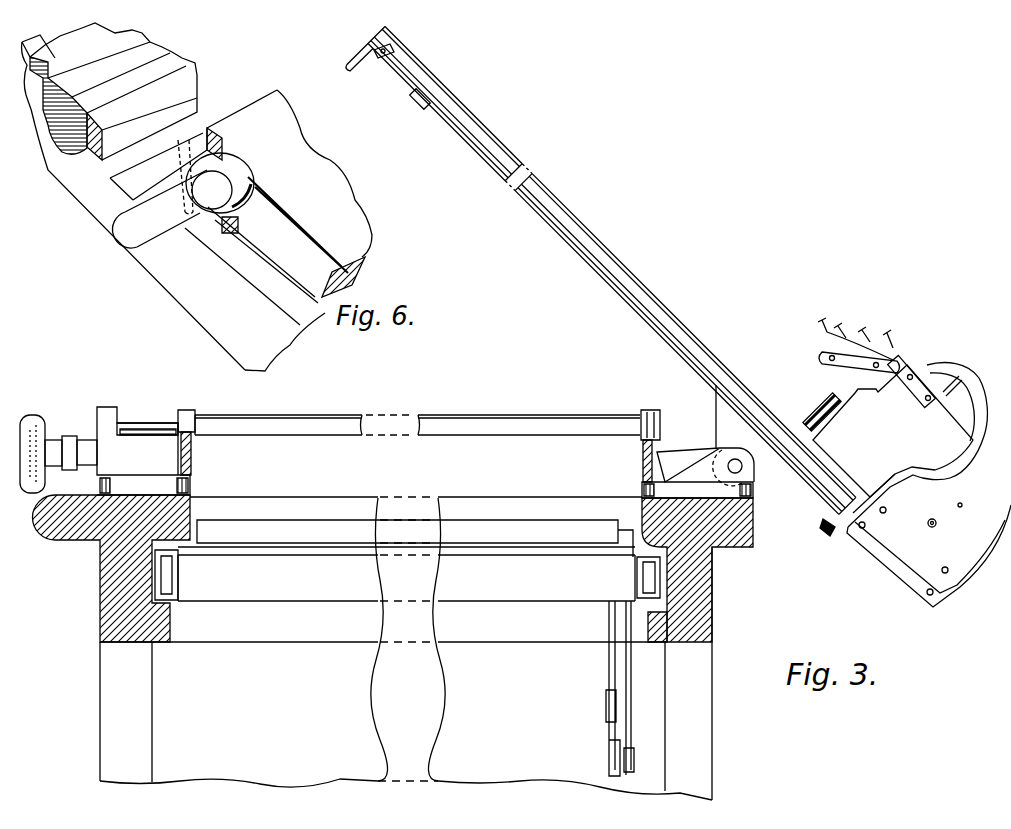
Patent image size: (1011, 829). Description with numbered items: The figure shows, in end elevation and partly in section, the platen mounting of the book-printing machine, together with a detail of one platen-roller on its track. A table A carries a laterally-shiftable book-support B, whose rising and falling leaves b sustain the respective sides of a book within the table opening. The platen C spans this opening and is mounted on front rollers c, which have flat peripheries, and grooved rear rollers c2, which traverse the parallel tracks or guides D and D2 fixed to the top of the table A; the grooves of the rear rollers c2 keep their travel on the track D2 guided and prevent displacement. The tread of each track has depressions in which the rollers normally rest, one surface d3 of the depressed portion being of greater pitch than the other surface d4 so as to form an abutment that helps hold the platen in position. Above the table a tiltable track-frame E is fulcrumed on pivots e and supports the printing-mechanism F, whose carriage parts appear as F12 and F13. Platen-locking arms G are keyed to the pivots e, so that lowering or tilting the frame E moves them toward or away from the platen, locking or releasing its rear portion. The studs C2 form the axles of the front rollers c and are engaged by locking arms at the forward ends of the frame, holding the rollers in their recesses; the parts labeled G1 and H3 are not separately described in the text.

In FIG. 3, the table A is at (100, 542).
In FIG. 3, the book-support B is at (419, 648).
In FIG. 3, the leaves b is at (318, 533).
In FIG. 3, the platen C is at (483, 413).
In FIG. 6, the platen C is at (289, 193).
In FIG. 3, the studs C2 is at (147, 423).
In FIG. 6, the studs C2 is at (130, 232).
In FIG. 3, the front rollers c is at (189, 410).
In FIG. 6, the front rollers c is at (243, 160).
In FIG. 3, the rear rollers c2 is at (648, 410).
In FIG. 3, the platen-supporting track D is at (190, 470).
In FIG. 6, the platen-supporting track D is at (173, 206).
In FIG. 3, the platen-supporting track D2 is at (657, 453).
In FIG. 3, the platen-locking arms G is at (714, 420).
In FIG. 6, the guide block G1 is at (130, 180).
In FIG. 3, the pivots e is at (752, 485).
In FIG. 3, the support H3 is at (717, 497).
In FIG. 3, the track-frame E is at (663, 312).
In FIG. 3, the printing-mechanism F is at (932, 358).
In FIG. 3, the handle plate F13 is at (893, 431).
In FIG. 3, the handle plate F12 is at (929, 555).
In FIG. 6, the surface of the depressed tread portion d3 is at (180, 174).
In FIG. 6, the surface of the depressed tread portion d4 is at (222, 227).